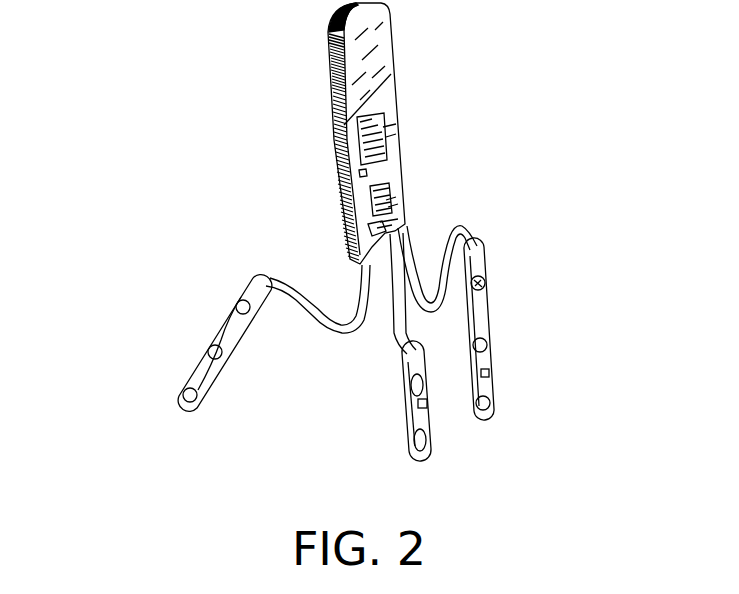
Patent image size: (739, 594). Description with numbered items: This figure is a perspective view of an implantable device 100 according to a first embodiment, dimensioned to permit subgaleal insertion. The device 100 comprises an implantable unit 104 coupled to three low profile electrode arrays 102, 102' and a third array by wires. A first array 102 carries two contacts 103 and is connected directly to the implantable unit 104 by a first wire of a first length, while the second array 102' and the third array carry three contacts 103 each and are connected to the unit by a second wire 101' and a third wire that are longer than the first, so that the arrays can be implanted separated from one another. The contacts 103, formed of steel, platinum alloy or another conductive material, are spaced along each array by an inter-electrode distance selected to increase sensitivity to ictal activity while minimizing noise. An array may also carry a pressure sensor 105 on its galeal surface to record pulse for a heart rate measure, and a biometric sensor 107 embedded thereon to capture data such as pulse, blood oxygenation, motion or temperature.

The implantable device 100 is at (130, 122).
The implantable unit 104 is at (328, 88).
The second wire 101' is at (313, 257).
The first electrode array 102 is at (382, 401).
The second electrode array 102' is at (232, 343).
The contacts 103 is at (235, 308).
The pressure sensor 105 is at (426, 410).
The biometric sensor 107 is at (492, 372).